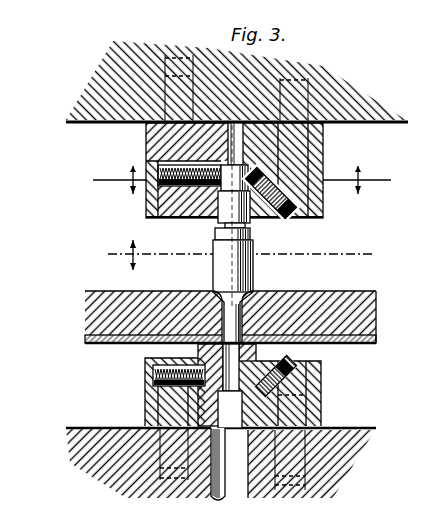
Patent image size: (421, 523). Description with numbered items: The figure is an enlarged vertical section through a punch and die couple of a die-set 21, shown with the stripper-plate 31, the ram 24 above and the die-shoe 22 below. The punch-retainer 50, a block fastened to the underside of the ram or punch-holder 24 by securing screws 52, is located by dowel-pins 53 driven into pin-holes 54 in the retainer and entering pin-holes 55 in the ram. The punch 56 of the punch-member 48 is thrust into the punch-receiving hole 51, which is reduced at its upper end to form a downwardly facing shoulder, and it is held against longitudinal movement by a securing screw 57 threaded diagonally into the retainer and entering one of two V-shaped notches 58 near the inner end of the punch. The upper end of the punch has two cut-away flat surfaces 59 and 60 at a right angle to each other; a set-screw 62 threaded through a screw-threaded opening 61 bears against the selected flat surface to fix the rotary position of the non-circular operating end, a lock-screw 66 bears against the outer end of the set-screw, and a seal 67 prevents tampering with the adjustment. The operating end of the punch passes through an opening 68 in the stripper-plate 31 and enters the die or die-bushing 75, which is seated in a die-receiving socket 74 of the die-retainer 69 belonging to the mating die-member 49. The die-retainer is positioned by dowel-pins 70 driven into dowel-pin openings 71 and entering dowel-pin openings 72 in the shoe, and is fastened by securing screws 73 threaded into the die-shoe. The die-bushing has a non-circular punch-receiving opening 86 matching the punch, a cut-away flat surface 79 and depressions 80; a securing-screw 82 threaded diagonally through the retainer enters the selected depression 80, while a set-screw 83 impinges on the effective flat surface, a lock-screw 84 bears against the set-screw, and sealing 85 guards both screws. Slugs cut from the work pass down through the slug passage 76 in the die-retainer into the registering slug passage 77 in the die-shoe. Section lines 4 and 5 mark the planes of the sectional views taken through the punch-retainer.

The section line 4- 4 is at (233, 255).
The section line 5- 5 is at (237, 179).
The die block 21 is at (360, 93).
The die-shoe 22 is at (348, 434).
The ram 24 is at (118, 66).
The stripper-plate 31 is at (318, 300).
The retainer 48 is at (138, 203).
The mating die-member 49 is at (158, 398).
The punch-retainer 50 is at (138, 142).
The punch-receiving hole 51 is at (190, 208).
The securing screws 52 is at (138, 126).
The dowel-pins 53 is at (300, 134).
The pin-holes 54 is at (317, 193).
The pin-holes 55 is at (302, 82).
The punch 56 is at (245, 267).
The securing screw 57 is at (262, 206).
The V-shaped notches 58 is at (234, 207).
The cut-away flat surface 59 is at (234, 157).
The cut-away flat surface 60 is at (138, 155).
The screw-threaded opening 61 is at (165, 208).
The set-screw 62 is at (175, 212).
The lock-screw 66 is at (160, 209).
The seal 67 is at (138, 178).
The opening 68 is at (211, 302).
The die-retainer 69 is at (314, 375).
The dowel-pins 70 is at (315, 400).
The dowel-pin openings 71 is at (314, 357).
The dowel-pin openings 72 is at (297, 481).
The securing screws 73 is at (148, 443).
The die-receiving socket 74 is at (231, 464).
The die-bushing 75 is at (275, 316).
The slug passage 76 is at (231, 409).
The slug passage 77 is at (223, 470).
The cut-away flat surface 79 is at (165, 352).
The depressions 80 is at (255, 358).
The securing-screw 82 is at (256, 348).
The set-screw 83 is at (157, 396).
The lock-screw 84 is at (146, 369).
The sealing 85 is at (140, 373).
The punch-receiving opening 86 is at (193, 340).